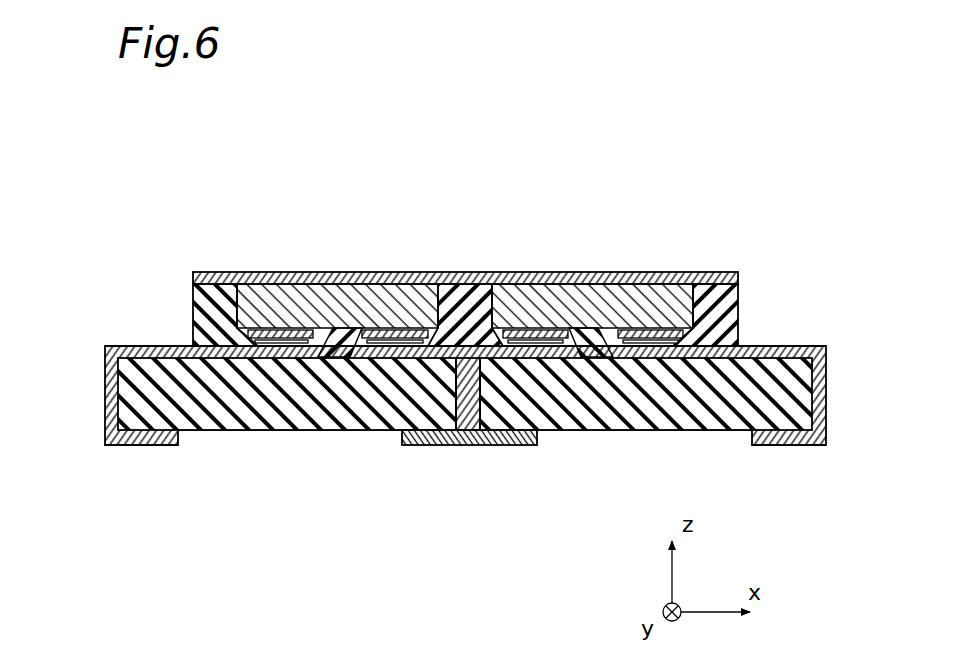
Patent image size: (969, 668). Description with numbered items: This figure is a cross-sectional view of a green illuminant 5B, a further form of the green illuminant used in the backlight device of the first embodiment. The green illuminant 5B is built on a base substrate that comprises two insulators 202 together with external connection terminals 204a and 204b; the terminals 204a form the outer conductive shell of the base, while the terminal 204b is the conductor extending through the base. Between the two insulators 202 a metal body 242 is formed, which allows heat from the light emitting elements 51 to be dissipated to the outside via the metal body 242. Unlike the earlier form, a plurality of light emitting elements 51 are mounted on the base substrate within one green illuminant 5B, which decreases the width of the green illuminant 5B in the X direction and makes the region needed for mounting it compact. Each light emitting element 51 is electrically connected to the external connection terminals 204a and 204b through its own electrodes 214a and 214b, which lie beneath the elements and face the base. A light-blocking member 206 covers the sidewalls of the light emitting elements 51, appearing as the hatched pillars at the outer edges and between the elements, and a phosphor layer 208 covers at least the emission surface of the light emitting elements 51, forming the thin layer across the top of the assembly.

The green illuminant 5B is at (650, 160).
The insulator 202 is at (242, 432).
The external connection terminal 204a is at (108, 410).
The external connection terminal 204b is at (413, 358).
The light-blocking member 206 is at (220, 272).
The phosphor layer 208 is at (702, 285).
The electrode 214a is at (285, 330).
The electrode 214b is at (503, 336).
The metal body 242 is at (493, 432).
The light emitting element 51 is at (366, 294).